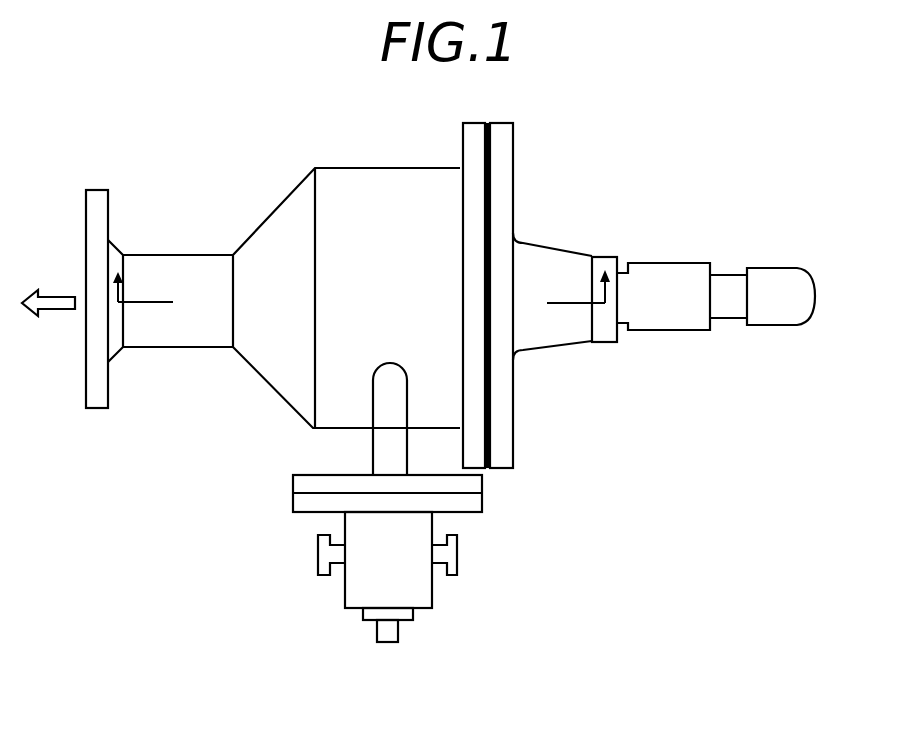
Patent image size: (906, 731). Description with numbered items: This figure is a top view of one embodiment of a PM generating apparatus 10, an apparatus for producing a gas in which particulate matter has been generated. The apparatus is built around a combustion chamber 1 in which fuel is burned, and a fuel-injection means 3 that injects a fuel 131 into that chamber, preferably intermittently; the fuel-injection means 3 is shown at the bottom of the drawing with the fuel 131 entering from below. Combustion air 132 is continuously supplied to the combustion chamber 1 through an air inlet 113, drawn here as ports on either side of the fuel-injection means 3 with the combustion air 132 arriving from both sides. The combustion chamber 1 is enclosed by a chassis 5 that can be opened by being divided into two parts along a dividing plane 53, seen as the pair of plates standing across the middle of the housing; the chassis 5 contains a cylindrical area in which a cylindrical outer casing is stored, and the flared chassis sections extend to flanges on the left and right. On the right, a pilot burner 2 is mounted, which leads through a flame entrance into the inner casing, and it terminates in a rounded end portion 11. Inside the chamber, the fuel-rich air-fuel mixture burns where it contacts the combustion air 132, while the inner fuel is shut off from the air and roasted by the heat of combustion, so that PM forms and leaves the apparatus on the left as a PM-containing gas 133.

The combustion chamber 1 is at (401, 156).
The PM generating apparatus 10 is at (603, 157).
The chassis 5 is at (267, 248).
The dividing plane 53 is at (490, 165).
The pilot burner 2 is at (662, 280).
The actuator end portion 11 is at (772, 280).
The fuel-injection means 3 is at (412, 614).
The air inlet 113 is at (455, 545).
The fuel 131 is at (386, 650).
The combustion air 132 is at (311, 558).
The PM-containing gas 133 is at (58, 312).